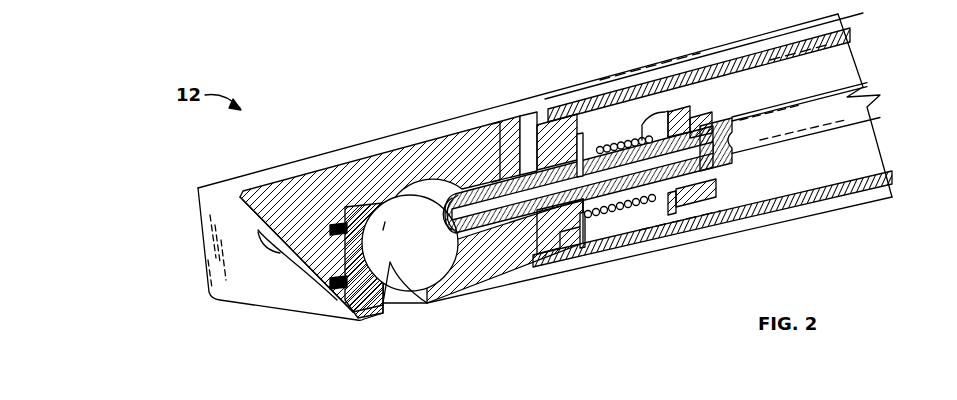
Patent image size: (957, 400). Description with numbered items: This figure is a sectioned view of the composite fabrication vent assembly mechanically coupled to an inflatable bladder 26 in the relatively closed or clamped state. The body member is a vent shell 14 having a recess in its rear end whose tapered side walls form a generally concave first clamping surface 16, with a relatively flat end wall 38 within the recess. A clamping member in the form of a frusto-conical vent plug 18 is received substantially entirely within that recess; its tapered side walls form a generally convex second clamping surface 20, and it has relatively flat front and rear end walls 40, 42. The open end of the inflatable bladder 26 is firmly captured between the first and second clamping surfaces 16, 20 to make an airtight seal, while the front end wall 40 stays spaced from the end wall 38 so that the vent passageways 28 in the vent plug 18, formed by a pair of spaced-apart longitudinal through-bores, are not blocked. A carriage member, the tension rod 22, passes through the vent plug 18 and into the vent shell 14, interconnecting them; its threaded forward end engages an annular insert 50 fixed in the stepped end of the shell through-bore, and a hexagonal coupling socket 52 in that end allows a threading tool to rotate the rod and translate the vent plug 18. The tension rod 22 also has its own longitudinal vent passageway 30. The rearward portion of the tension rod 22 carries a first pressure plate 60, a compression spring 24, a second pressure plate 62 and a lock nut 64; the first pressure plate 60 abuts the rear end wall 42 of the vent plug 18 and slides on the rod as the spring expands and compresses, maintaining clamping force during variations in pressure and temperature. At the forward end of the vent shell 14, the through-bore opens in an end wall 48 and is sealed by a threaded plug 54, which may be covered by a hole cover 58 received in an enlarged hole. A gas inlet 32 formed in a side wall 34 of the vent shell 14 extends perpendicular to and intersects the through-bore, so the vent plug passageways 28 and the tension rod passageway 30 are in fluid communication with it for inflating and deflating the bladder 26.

The vent shell 14 is at (331, 162).
The first clamping surface 16 is at (532, 248).
The vent plug 18 is at (572, 263).
The second clamping surface 20 is at (528, 138).
The tension rod 22 is at (650, 195).
The compression spring 24 is at (632, 205).
The inflatable bladder 26 is at (763, 40).
The vent passageways 28 is at (538, 133).
The vent passageway 30 is at (715, 190).
The gas inlet 32 is at (395, 303).
The side wall 34 is at (452, 300).
The end wall 38 is at (497, 140).
The front end wall 40 is at (462, 243).
The rear end wall 42 is at (580, 107).
The end wall 48 is at (198, 215).
The annular insert 50 is at (513, 250).
The coupling socket 52 is at (393, 195).
The threaded plug 54 is at (452, 138).
The hole cover 58 is at (253, 252).
The first pressure plate 60 is at (592, 133).
The second pressure plate 62 is at (657, 123).
The lock nut 64 is at (697, 199).